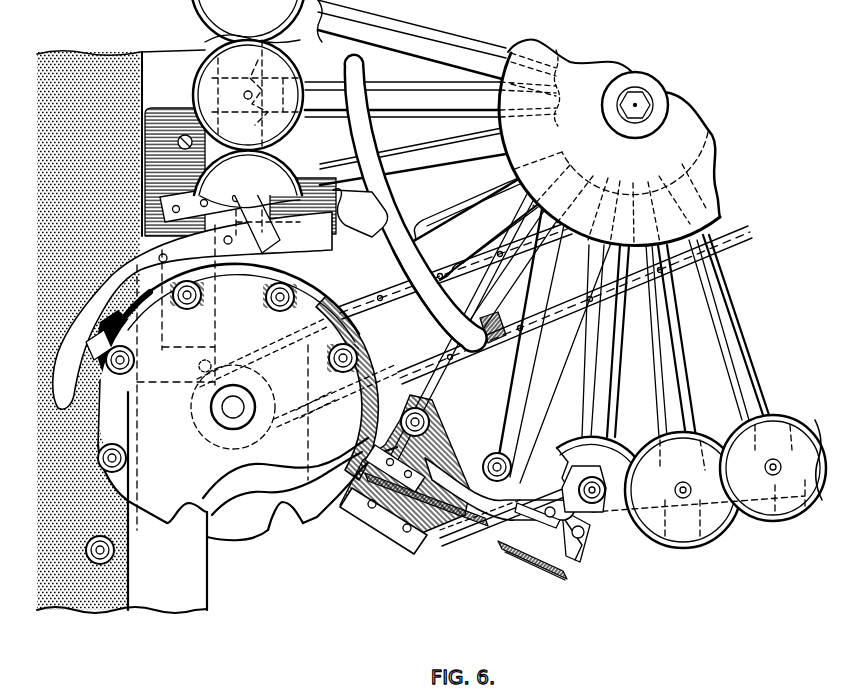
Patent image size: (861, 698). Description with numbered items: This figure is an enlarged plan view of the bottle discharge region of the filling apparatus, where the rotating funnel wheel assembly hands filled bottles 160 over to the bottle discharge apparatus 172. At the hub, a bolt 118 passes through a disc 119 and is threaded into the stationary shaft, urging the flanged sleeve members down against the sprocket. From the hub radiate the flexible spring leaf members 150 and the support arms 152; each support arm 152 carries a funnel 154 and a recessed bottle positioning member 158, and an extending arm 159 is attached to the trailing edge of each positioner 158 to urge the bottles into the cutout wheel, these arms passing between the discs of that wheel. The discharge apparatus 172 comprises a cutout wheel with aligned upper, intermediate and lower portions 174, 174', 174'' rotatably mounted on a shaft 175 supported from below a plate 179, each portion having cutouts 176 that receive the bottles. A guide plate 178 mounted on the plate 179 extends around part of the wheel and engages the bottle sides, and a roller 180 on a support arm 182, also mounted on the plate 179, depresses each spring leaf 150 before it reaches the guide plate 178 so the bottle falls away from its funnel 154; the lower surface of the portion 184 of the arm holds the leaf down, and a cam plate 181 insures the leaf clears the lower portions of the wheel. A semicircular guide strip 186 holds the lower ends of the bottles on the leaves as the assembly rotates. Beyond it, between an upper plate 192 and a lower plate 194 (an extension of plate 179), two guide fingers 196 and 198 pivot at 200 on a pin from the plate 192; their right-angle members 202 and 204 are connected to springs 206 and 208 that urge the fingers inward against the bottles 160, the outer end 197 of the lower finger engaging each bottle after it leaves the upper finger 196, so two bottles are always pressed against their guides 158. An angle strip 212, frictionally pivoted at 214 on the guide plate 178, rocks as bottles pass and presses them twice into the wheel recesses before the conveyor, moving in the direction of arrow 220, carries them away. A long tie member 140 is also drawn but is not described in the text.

The bolt 118 is at (645, 100).
The disc 119 is at (666, 103).
The tie rod 140 is at (745, 236).
The spring leaf member 150 is at (420, 212).
The support arm 152 is at (428, 50).
The funnel 154 is at (220, 56).
The bottle positioning member 158 is at (258, 56).
The extending arm 159 is at (260, 135).
The bottle 160 is at (205, 305).
The bottle discharge apparatus 172 is at (305, 582).
The upper portion of cutout wheel 174 is at (254, 417).
The intermediate portion of cutout wheel 174' is at (238, 549).
The lower portion of cutout wheel 174'' is at (350, 490).
The shaft 175 is at (230, 408).
The cutout 176 is at (186, 528).
The guide plate 178 is at (118, 268).
The plate 179 is at (158, 146).
The roller 180 is at (452, 331).
The cam plate 181 is at (440, 446).
The support arm 182 is at (355, 228).
The portion of roller support arm 184 is at (404, 270).
The semicircular guide strip 186 is at (604, 538).
The upper plate 192 is at (355, 388).
The lower plate 194 is at (420, 542).
The guide finger 196 is at (472, 472).
The outer end of lower finger 197 is at (412, 378).
The guide finger 198 is at (440, 548).
The pivot 200 is at (578, 495).
The right angle extending member 202 is at (588, 556).
The right angle extending member 204 is at (566, 576).
The spring 206 is at (516, 553).
The spring 208 is at (530, 572).
The angle strip 212 is at (104, 300).
The pivot 214 is at (88, 328).
The arrow 220 is at (57, 560).